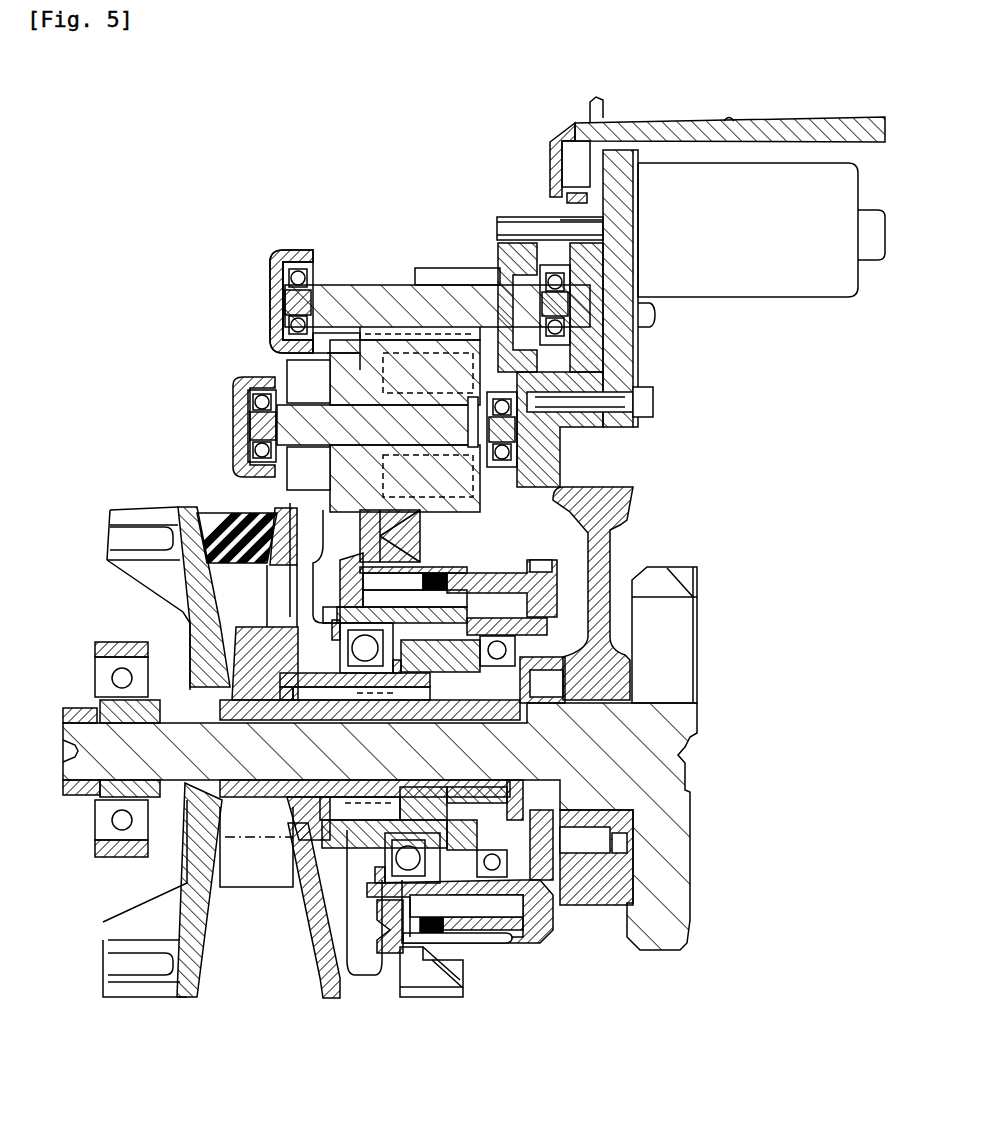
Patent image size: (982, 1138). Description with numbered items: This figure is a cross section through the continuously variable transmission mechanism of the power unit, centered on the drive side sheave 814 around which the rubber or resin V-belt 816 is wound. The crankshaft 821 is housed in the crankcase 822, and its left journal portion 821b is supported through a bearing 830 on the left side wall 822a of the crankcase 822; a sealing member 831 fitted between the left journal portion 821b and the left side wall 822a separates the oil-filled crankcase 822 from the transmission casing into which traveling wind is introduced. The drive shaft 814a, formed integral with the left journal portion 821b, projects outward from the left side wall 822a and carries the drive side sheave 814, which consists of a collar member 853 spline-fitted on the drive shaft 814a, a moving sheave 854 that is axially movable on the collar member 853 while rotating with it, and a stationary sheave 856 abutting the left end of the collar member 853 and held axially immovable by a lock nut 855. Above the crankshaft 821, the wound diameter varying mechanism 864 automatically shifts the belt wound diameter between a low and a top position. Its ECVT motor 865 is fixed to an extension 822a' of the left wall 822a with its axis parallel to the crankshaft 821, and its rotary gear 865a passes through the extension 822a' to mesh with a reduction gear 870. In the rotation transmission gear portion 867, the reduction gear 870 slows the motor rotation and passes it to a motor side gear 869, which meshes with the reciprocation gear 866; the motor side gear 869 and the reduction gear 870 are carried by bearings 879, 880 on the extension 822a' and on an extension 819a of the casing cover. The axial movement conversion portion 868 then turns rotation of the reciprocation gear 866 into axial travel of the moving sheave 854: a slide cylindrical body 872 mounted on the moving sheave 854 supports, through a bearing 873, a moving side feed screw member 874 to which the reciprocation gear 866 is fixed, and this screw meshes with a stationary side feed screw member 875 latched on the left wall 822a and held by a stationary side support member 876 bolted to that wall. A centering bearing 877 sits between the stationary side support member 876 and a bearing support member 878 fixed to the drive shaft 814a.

The crankcase 822 is at (568, 125).
The extension of the left wall 822a' is at (526, 164).
The rotary gear 865a is at (518, 218).
The bearing 880 is at (315, 270).
The reduction gear 870 is at (393, 275).
The extension of the casing cover 819a is at (265, 272).
The wound diameter varying mechanism 864 is at (226, 280).
The rotation transmission gear portion 867 is at (265, 362).
The bearing 879 is at (238, 382).
The ECVT motor 865 is at (756, 300).
The drive side sheave 814 is at (135, 505).
The V-belt 816 is at (217, 508).
The reciprocation gear 866 is at (357, 537).
The motor side gear 869 is at (488, 492).
The left side wall 822a is at (645, 593).
The moving side feed screw member 874 is at (479, 567).
The stationary side feed screw member 875 is at (493, 577).
The bearing 873 is at (290, 623).
The bearing 830 is at (630, 652).
The lock nut 855 is at (80, 707).
The slide cylindrical body 872 is at (433, 668).
The centering bearing 877 is at (517, 645).
The bearing support member 878 is at (514, 688).
The sealing member 831 is at (520, 692).
The left journal portion 821b is at (587, 817).
The drive shaft 814a is at (190, 783).
The crankshaft 821 is at (697, 857).
The collar member 853 is at (259, 808).
The stationary side support member 876 is at (557, 928).
The axial movement conversion portion 868 is at (515, 965).
The stationary sheave 856 is at (197, 977).
The moving sheave 854 is at (317, 992).